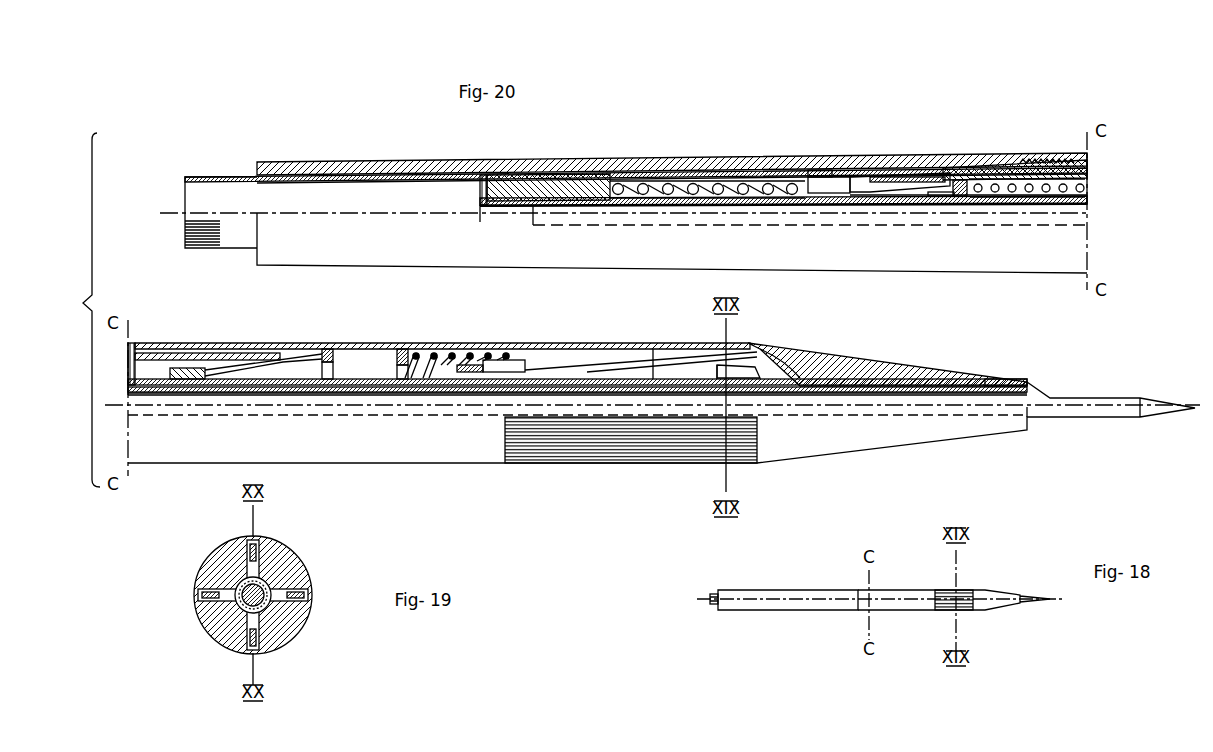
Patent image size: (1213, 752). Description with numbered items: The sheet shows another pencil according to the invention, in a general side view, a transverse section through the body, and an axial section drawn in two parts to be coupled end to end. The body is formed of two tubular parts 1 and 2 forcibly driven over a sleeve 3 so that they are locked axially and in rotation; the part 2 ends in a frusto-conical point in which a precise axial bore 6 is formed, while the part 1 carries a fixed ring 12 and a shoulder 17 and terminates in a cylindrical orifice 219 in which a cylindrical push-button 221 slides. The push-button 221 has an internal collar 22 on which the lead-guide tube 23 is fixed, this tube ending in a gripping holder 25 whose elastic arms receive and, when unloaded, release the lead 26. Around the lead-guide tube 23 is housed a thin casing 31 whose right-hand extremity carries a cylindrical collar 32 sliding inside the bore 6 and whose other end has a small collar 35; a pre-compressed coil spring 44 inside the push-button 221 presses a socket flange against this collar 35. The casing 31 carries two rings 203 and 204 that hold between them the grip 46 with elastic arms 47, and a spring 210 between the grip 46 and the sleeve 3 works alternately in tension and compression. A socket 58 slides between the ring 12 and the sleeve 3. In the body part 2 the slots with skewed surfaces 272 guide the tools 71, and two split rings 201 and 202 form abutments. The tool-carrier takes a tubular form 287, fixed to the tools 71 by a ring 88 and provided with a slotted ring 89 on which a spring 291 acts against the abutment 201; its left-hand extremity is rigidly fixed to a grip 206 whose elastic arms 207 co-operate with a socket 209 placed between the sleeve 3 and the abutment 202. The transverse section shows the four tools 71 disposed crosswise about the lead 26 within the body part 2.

In FIG. 20, the body part 1 is at (318, 163).
In FIG. 18, the body part 1 is at (790, 606).
In FIG. 20, the body part 2 is at (577, 344).
In FIG. 19, the body part 2 is at (216, 573).
In FIG. 18, the body part 2 is at (910, 606).
In FIG. 20, the sleeve 3 is at (975, 167).
In FIG. 20, the axial bore 6 is at (915, 386).
In FIG. 20, the ring 12 is at (828, 176).
In FIG. 20, the shoulder 17 is at (350, 177).
In FIG. 20, the internal collar 22 is at (540, 178).
In FIG. 20, the lead-guide tube 23 is at (690, 206).
In FIG. 20, the gripping holder 25 is at (1040, 395).
In FIG. 20, the lead 26 is at (355, 402).
In FIG. 19, the lead 26 is at (268, 606).
In FIG. 20, the casing 31 is at (895, 203).
In FIG. 20, the cylindrical collar 32 is at (990, 382).
In FIG. 20, the small collar 35 is at (815, 170).
In FIG. 20, the coil spring 44 is at (655, 184).
In FIG. 20, the grip holder 46 is at (965, 197).
In FIG. 20, the elastic arms 47 is at (860, 176).
In FIG. 20, the socket 58 is at (898, 176).
In FIG. 20, the tools 71 is at (758, 353).
In FIG. 19, the tools 71 is at (268, 546).
In FIG. 20, the ring 88 is at (488, 366).
In FIG. 20, the ring 89 is at (525, 362).
In FIG. 20, the split ring 201 is at (402, 349).
In FIG. 20, the split ring 202 is at (335, 349).
In FIG. 20, the ring 203 is at (935, 203).
In FIG. 20, the ring 204 is at (1010, 180).
In FIG. 20, the grip 206 is at (186, 380).
In FIG. 20, the elastic arms 207 is at (305, 396).
In FIG. 20, the socket 209 is at (168, 353).
In FIG. 20, the spring 210 is at (1060, 158).
In FIG. 20, the orifice 219 is at (258, 177).
In FIG. 20, the push-button 221 is at (202, 176).
In FIG. 18, the push-button 221 is at (718, 605).
In FIG. 20, the skewed surfaces 272 is at (792, 360).
In FIG. 20, the tubular tool-carrier 287 is at (230, 366).
In FIG. 20, the spring 291 is at (452, 353).